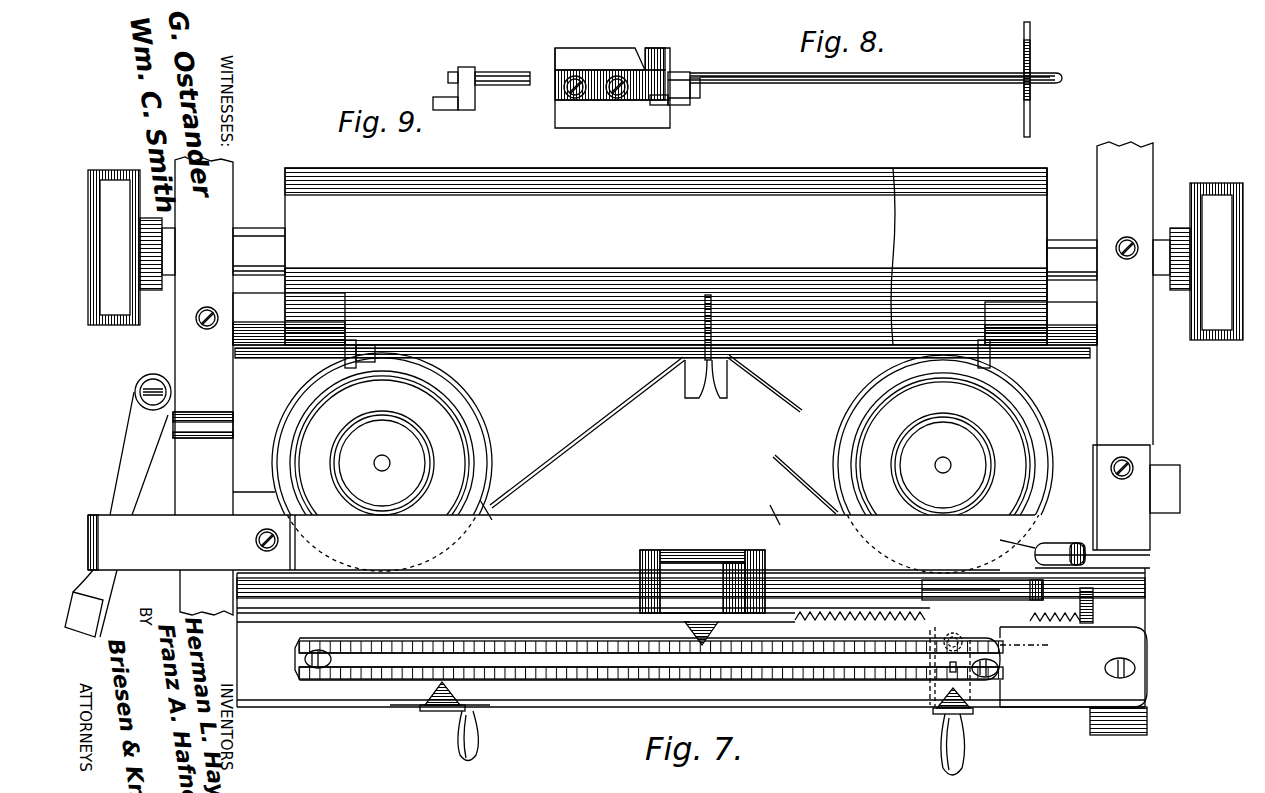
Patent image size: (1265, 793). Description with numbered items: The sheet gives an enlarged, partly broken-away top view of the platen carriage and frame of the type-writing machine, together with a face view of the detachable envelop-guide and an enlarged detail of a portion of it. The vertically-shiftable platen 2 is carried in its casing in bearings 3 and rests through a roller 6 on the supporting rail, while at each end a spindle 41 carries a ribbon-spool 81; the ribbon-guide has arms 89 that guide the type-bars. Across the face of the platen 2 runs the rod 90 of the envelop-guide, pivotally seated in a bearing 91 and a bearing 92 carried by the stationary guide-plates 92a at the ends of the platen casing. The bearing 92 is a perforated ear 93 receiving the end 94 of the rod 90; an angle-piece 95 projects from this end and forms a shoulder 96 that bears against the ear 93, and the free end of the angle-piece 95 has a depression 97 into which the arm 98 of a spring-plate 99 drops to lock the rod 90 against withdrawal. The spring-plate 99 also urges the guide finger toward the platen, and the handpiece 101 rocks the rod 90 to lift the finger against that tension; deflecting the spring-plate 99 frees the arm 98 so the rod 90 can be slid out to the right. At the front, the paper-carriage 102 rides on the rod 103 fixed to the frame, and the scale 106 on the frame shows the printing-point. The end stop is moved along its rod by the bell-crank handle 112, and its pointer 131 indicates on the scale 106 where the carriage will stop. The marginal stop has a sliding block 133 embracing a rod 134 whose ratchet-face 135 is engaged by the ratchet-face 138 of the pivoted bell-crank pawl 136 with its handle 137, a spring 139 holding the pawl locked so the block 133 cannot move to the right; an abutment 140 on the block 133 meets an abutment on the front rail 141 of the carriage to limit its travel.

In FIG. 7, the platen 2 is at (969, 256).
In FIG. 7, the bearings 3 is at (666, 247).
In FIG. 7, the roller 6 is at (562, 447).
In FIG. 7, the spindle 41 is at (941, 462).
In FIG. 7, the ribbon-spool 81 is at (662, 463).
In FIG. 7, the arms 89 is at (695, 385).
In FIG. 7, the rod 90 is at (581, 359).
In FIG. 8, the rod 90 is at (838, 84).
In FIG. 7, the bearing 91 is at (990, 352).
In FIG. 7, the bearing 92 is at (345, 350).
In FIG. 8, the bearing 92 is at (876, 64).
In FIG. 7, the stationary guide-plates 92a is at (665, 319).
In FIG. 8, the perforated ear 93 is at (675, 70).
In FIG. 7, the end of rod 94 is at (356, 357).
In FIG. 8, the end of rod 94 is at (652, 48).
In FIG. 9, the end of rod 94 is at (448, 74).
In FIG. 8, the angle-piece 95 is at (706, 92).
In FIG. 9, the angle-piece 95 is at (476, 97).
In FIG. 9, the shoulder 96 is at (460, 66).
In FIG. 9, the depression 97 is at (447, 110).
In FIG. 8, the arm 98 is at (655, 104).
In FIG. 8, the spring-plate 99 is at (632, 62).
In FIG. 7, the handpiece 101 is at (712, 298).
In FIG. 8, the handpiece 101 is at (1031, 52).
In FIG. 7, the paper-carriage 102 is at (1136, 497).
In FIG. 7, the rod 103 is at (696, 620).
In FIG. 7, the scale 106 is at (592, 642).
In FIG. 7, the handle 112 is at (482, 742).
In FIG. 7, the pointer 131 is at (438, 712).
In FIG. 7, the sliding block 133 is at (1033, 620).
In FIG. 7, the rod 134 is at (805, 598).
In FIG. 7, the ratchet-face 135 is at (928, 628).
In FIG. 7, the bell-crank pawl 136 is at (968, 700).
In FIG. 7, the handle 137 is at (968, 755).
In FIG. 7, the ratchet-face 138 is at (1062, 623).
In FIG. 7, the spring 139 is at (1047, 648).
In FIG. 7, the abutment 140 is at (1058, 590).
In FIG. 7, the front rail 141 is at (1026, 554).